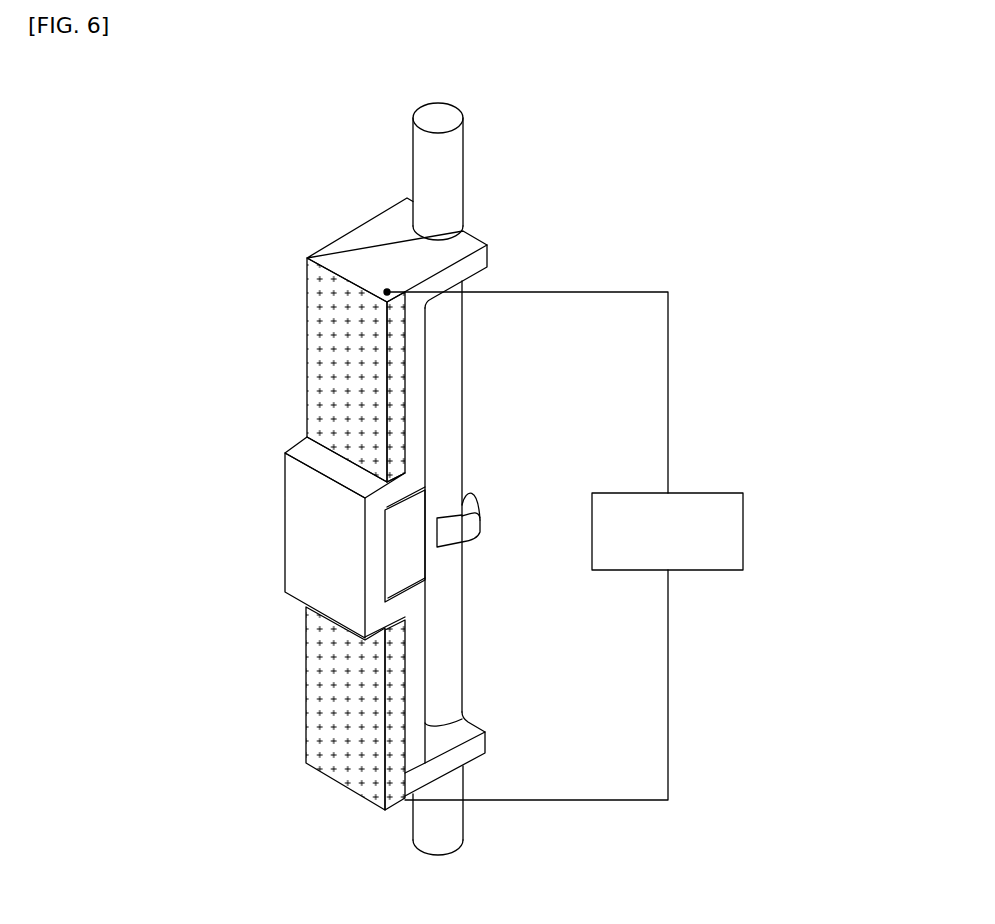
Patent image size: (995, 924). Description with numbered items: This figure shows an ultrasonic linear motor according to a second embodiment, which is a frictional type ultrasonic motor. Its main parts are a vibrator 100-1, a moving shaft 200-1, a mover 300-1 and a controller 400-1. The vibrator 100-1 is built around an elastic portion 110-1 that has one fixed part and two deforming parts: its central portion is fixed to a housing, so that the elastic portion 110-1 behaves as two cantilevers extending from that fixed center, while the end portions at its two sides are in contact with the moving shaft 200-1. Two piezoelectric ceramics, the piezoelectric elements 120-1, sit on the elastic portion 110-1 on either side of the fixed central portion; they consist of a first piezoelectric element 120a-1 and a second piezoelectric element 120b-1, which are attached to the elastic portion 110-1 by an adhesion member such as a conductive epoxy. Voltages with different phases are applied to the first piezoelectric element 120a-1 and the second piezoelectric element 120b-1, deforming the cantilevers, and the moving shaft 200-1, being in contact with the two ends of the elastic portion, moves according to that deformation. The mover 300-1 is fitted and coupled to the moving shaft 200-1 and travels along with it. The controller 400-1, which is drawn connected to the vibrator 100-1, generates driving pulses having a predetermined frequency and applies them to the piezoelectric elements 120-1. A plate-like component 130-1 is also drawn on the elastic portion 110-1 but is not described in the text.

The vibrator 100-1 is at (316, 502).
The elastic portion 110-1 is at (308, 583).
The piezoelectric elements 120-1 is at (231, 534).
The first piezoelectric element 120a-1 is at (333, 368).
The second piezoelectric element 120b-1 is at (285, 708).
The sensor plate 130-1 is at (412, 560).
The moving shaft 200-1 is at (443, 122).
The mover 300-1 is at (470, 498).
The controller 400-1 is at (743, 531).